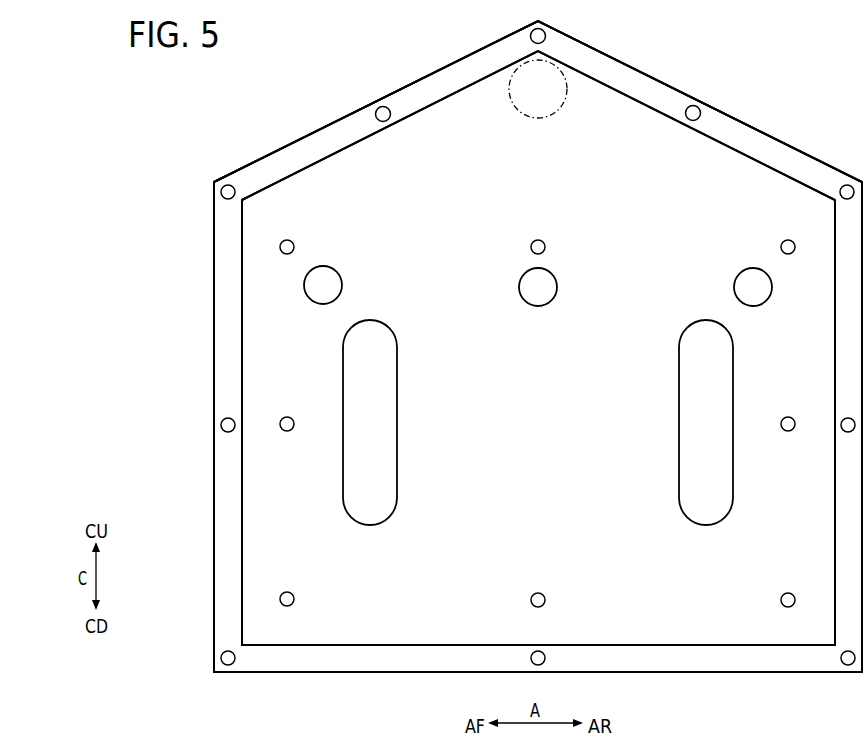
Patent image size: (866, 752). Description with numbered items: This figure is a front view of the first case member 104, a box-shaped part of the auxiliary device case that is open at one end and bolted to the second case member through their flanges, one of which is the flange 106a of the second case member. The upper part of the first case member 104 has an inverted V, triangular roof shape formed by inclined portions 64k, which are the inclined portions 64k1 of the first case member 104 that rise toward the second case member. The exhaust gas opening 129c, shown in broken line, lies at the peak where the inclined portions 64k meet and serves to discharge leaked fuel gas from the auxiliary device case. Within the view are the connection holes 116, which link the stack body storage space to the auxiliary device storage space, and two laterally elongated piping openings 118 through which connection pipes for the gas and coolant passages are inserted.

The first case member 104 is at (750, 106).
The flange 106a is at (225, 313).
The inclined portion 64k is at (535, 104).
The inclined portion 64k1 is at (317, 147).
The connection hole 116 is at (326, 278).
The piping opening 118 is at (354, 362).
The exhaust gas opening 129c is at (562, 107).